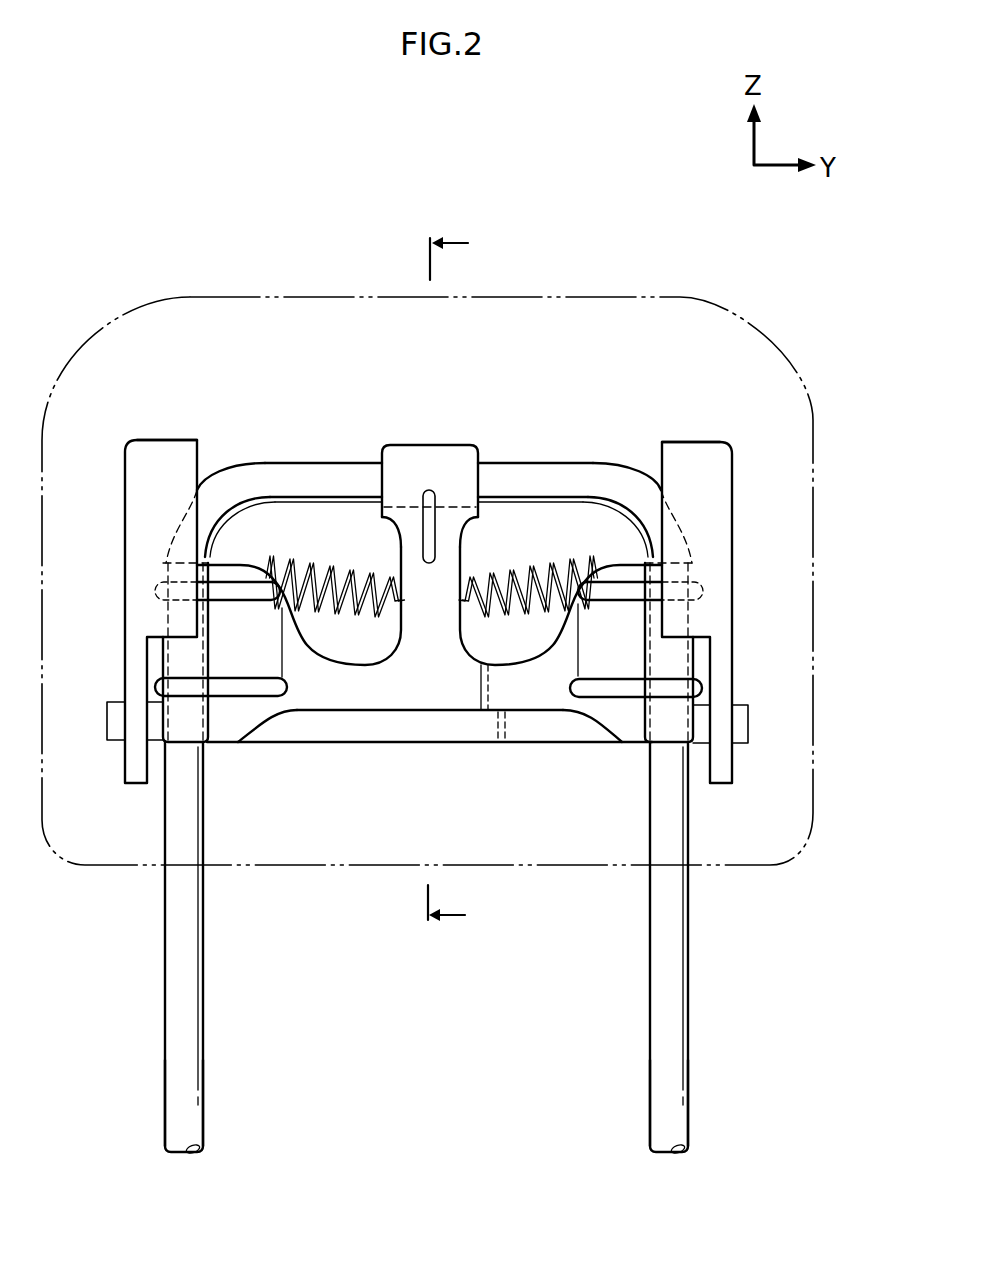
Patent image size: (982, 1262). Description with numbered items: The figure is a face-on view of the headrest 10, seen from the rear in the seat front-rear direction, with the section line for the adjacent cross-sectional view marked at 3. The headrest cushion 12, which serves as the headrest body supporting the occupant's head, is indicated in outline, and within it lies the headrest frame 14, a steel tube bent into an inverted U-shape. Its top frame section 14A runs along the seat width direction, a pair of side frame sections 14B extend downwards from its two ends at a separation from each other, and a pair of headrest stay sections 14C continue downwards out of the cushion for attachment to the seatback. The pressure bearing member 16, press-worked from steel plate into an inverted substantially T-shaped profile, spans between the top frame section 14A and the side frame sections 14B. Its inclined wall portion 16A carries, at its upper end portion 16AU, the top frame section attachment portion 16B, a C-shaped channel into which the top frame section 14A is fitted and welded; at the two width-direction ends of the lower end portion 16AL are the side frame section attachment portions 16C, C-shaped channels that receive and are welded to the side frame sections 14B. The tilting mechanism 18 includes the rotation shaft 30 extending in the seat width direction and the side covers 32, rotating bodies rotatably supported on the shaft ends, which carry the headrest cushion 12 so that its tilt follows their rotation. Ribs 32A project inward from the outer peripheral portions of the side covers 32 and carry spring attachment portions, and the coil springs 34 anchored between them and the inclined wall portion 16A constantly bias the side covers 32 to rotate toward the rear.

The section line of FIG. 3 is at (459, 583).
The headrest 10 is at (432, 531).
The headrest cushion 12 is at (765, 337).
The headrest frame 14 is at (428, 778).
The top frame section 14A is at (325, 463).
The side frame sections 14B is at (165, 838).
The headrest stay sections 14C is at (165, 1046).
The pressure bearing member 16 is at (429, 598).
The inclined wall portion 16A is at (429, 618).
The lower end portion 16AL is at (432, 667).
The upper end portion 16AU is at (443, 533).
The top frame section attachment portion 16B is at (422, 463).
The side frame section attachment portions 16C is at (223, 712).
The tilting mechanism 18 is at (430, 579).
The rotation shaft 30 is at (540, 745).
The side covers 32 is at (430, 579).
The ribs 32A is at (198, 457).
The coil springs 34 is at (327, 568).